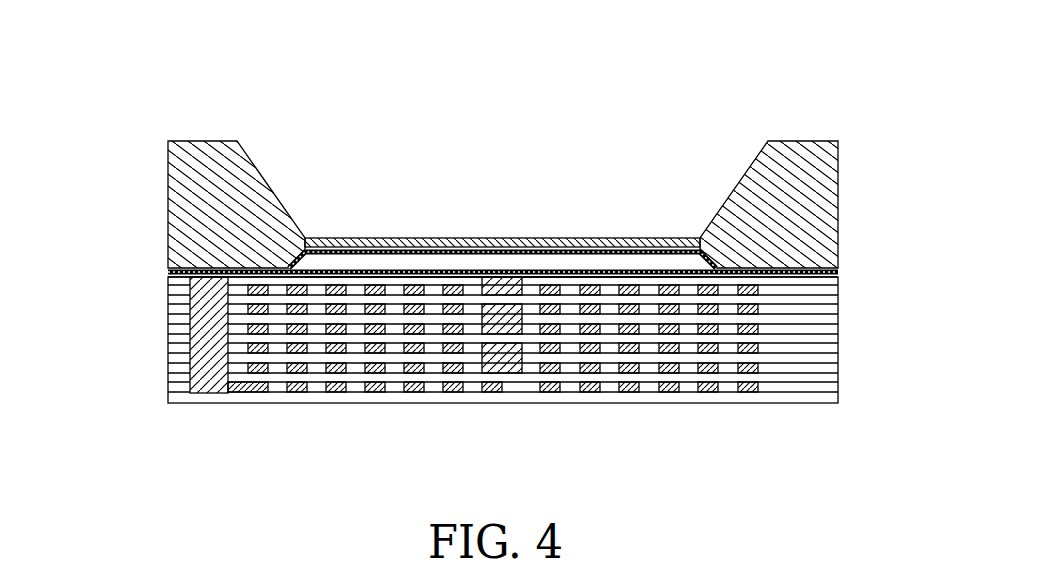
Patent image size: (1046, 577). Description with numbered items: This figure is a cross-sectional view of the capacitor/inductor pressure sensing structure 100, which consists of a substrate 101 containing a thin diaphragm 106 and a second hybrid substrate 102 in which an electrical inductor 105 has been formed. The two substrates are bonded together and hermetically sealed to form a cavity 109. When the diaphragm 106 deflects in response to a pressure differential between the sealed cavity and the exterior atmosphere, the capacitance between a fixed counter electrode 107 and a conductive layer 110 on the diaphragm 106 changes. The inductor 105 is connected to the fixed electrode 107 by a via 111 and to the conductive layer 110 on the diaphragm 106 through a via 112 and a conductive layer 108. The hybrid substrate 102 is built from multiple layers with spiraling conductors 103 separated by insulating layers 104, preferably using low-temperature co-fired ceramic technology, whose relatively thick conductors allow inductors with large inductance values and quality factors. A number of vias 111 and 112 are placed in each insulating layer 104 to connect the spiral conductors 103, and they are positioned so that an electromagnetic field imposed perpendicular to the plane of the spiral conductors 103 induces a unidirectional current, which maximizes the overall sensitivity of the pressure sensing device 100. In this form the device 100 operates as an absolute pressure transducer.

The pressure sensing structure 100 is at (469, 183).
The substrate 101 is at (190, 187).
The second hybrid substrate 102 is at (357, 404).
The spiraling conductors 103 is at (181, 387).
The insulating layers 104 is at (826, 387).
The electrical inductor 105 is at (712, 400).
The thin diaphragm 106 is at (630, 243).
The fixed counter electrode 107 is at (568, 267).
The conductive layer 108 is at (838, 273).
The cavity 109 is at (398, 262).
The conductive layer 110 is at (812, 266).
The via 111 is at (507, 287).
The via 112 is at (207, 372).